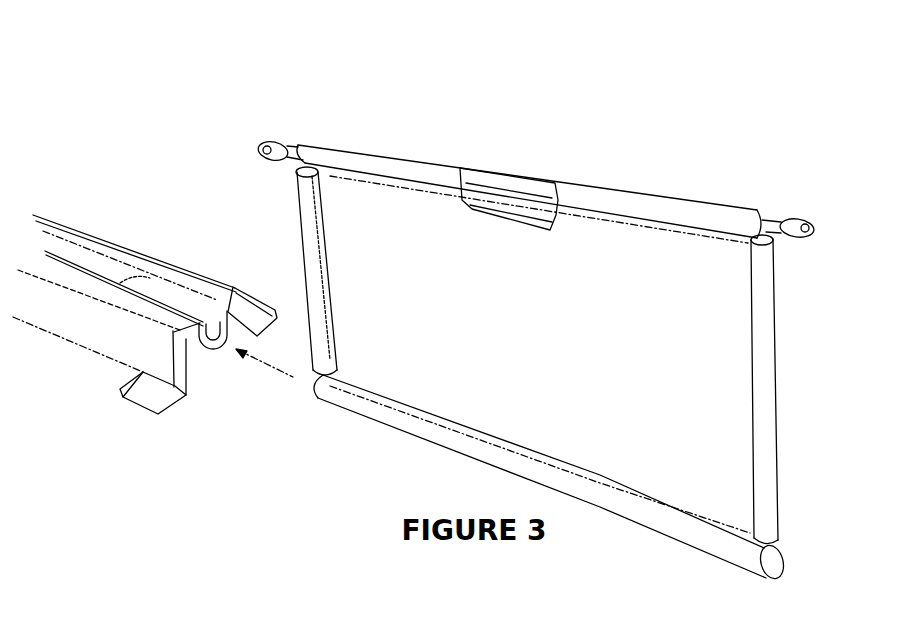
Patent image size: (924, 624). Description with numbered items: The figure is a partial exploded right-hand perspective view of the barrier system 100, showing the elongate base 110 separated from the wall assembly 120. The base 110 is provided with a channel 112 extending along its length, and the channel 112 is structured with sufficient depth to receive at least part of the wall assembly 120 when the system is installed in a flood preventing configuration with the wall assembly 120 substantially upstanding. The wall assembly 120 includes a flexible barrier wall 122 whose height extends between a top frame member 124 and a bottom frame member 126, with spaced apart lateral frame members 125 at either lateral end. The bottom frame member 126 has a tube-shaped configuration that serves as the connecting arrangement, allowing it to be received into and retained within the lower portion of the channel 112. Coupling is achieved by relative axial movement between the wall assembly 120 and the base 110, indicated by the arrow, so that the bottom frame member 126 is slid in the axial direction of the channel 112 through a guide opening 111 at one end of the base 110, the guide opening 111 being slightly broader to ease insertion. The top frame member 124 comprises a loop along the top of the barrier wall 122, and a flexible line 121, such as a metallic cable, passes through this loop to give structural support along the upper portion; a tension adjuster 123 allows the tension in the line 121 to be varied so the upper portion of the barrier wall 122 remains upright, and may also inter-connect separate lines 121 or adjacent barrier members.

The barrier system 100 is at (200, 199).
The base 110 is at (52, 307).
The guide opening 111 is at (190, 302).
The channel 112 is at (208, 347).
The wall assembly 120 is at (421, 156).
The flexible line 121 is at (538, 185).
The flexible barrier wall 122 is at (693, 355).
The tension adjuster 123 is at (267, 150).
The top frame member 124 is at (643, 218).
The lateral frame member 125 is at (328, 313).
The bottom frame member 126 is at (648, 492).